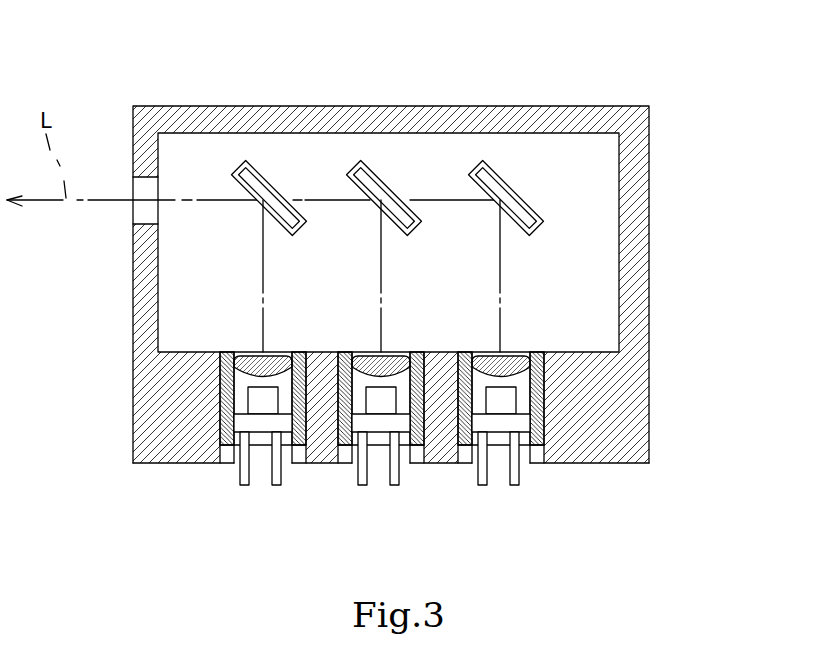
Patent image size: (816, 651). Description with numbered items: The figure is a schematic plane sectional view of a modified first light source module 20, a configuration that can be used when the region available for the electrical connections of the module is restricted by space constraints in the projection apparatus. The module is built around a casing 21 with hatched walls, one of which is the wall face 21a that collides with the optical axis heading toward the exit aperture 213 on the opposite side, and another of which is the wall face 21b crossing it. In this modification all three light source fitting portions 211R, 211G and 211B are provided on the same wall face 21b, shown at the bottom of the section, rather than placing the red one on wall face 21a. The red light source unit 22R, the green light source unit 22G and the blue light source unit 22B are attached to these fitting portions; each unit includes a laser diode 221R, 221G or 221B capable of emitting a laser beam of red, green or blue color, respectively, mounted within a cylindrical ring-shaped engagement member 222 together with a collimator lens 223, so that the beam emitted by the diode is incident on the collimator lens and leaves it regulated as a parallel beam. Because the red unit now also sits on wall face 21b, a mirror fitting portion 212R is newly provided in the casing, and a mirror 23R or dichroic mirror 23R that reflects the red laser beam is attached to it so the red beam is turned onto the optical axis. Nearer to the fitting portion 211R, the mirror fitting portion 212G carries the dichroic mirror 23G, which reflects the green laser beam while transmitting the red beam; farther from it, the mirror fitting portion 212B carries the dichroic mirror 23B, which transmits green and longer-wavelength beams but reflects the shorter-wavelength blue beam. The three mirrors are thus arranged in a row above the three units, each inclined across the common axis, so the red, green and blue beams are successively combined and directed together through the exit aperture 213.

The first light source module 20 is at (331, 88).
The casing 21 is at (495, 107).
The wall face 21a is at (631, 218).
The wall face 21b is at (630, 463).
The exit aperture 213 is at (133, 215).
The mirror fitting portion 212B is at (247, 161).
The mirror fitting portion 212G is at (362, 161).
The mirror fitting portion 212R is at (482, 161).
The dichroic mirror 23B is at (262, 198).
The dichroic mirror 23G is at (381, 198).
The mirror 23R is at (499, 198).
The light source unit 22B is at (255, 344).
The light source unit 22G is at (377, 344).
The light source unit 22R is at (491, 343).
The engagement member 222 is at (228, 403).
The collimator lens 223 is at (270, 360).
The light source fitting portion 211B is at (232, 463).
The light source fitting portion 211G is at (347, 463).
The light source fitting portion 211R is at (532, 460).
The laser diode 221B is at (262, 423).
The laser diode 221G is at (380, 423).
The laser diode 221R is at (497, 423).